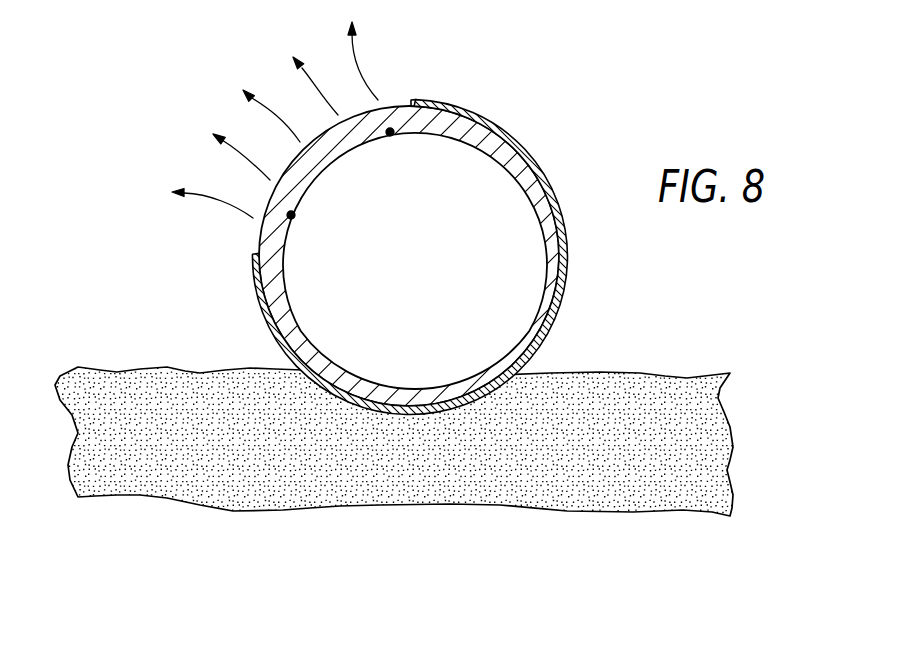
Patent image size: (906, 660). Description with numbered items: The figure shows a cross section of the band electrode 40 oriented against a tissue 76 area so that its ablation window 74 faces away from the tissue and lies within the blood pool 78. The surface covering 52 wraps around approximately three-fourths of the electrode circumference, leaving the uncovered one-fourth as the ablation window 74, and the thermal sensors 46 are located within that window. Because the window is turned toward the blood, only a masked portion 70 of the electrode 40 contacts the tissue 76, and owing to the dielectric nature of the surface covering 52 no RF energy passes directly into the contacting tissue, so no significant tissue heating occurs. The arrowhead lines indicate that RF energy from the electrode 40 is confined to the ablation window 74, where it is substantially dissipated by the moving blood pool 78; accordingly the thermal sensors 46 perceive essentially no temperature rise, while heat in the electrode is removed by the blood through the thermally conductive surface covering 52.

The electrode 40 is at (431, 229).
The thermal sensors 46 is at (390, 132).
The surface covering 52 is at (512, 134).
The masked portion 70 is at (486, 403).
The ablation window 74 is at (290, 168).
The tissue 76 is at (407, 413).
The blood pool 78 is at (128, 173).